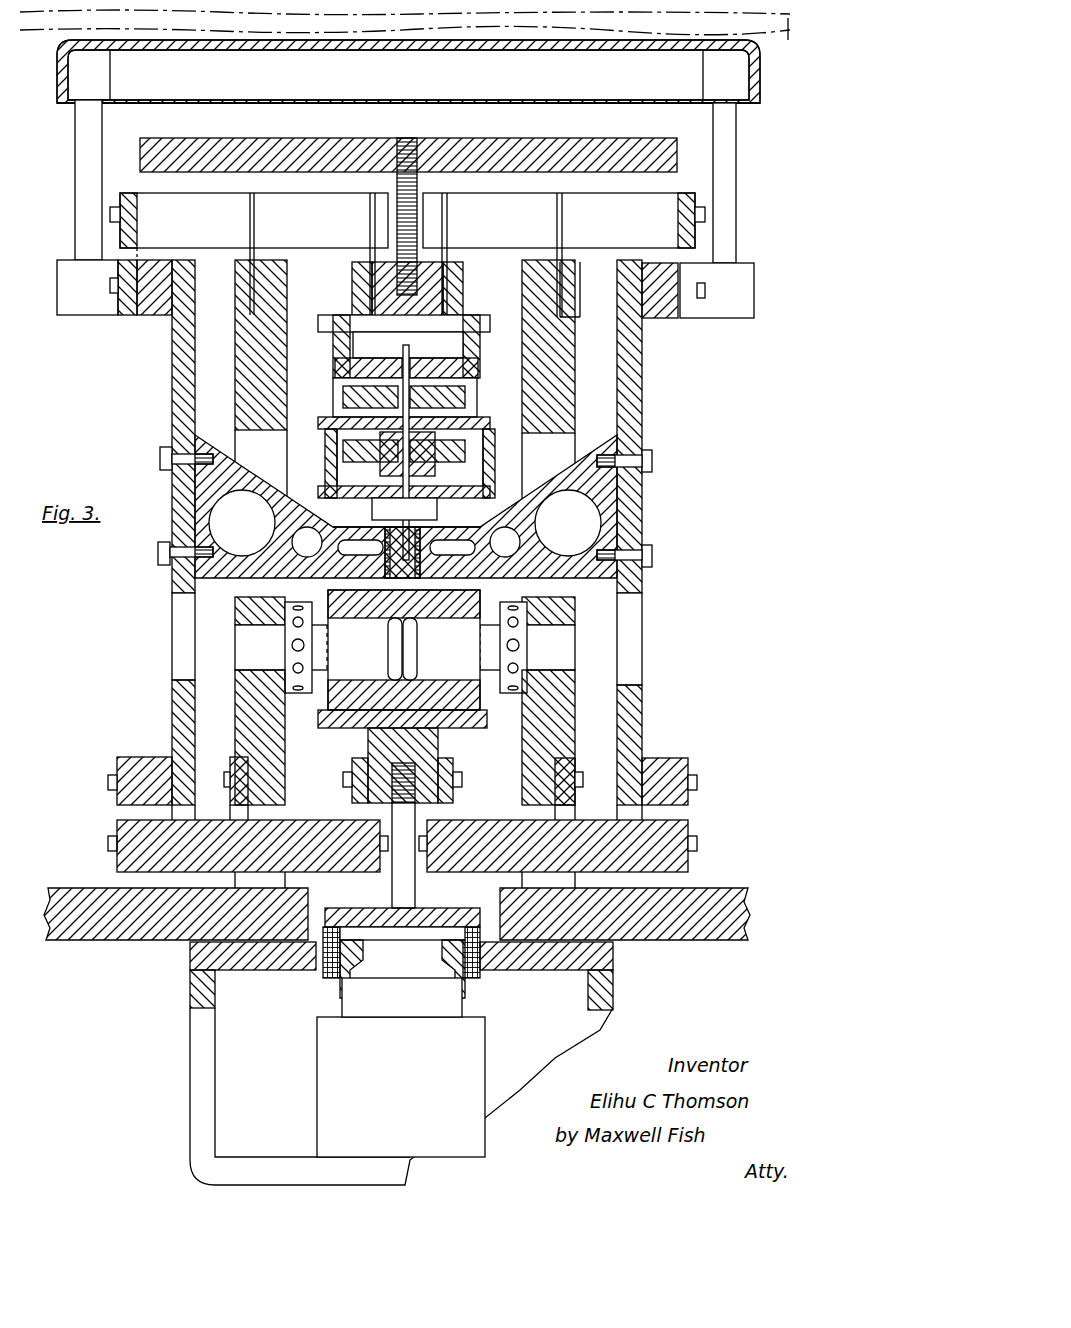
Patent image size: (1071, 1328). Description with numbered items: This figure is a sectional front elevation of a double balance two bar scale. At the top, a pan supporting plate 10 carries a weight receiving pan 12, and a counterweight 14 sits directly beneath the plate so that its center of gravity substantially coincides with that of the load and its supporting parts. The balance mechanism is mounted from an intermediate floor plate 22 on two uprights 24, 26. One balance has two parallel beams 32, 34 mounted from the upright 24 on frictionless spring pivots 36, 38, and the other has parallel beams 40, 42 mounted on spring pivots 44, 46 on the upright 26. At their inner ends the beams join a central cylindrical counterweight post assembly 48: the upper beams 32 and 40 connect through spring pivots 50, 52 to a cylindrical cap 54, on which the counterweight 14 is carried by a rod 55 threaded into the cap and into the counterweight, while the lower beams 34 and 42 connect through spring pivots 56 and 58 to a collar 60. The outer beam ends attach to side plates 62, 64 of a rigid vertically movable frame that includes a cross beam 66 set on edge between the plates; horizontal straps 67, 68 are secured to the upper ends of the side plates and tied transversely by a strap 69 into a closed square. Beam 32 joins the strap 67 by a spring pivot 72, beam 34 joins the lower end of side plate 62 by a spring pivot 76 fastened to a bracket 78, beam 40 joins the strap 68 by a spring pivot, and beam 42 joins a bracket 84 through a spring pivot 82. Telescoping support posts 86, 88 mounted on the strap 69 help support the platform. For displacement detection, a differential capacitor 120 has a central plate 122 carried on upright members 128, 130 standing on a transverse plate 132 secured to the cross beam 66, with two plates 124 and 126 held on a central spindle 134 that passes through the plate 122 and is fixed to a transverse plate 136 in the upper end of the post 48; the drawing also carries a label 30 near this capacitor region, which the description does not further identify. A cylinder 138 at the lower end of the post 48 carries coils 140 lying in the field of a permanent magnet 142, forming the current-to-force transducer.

The pan supporting plate 10 is at (392, 36).
The weight receiving pan 12 is at (286, 60).
The counterweight 14 is at (346, 142).
The intermediate floor plate 22 is at (72, 942).
The upright 24 is at (240, 610).
The upright 26 is at (570, 618).
The disc assembly 30 is at (478, 394).
The upper beam 32 is at (214, 250).
The lower beam 34 is at (155, 862).
The frictionless spring pivot 36 is at (258, 240).
The frictionless spring pivot 38 is at (232, 806).
The upper beam 40 is at (612, 262).
The lower beam 42 is at (648, 865).
The frictionless spring pivot 44 is at (562, 240).
The frictionless spring pivot 46 is at (568, 808).
The cylindrical counterweight post assembly 48 is at (324, 358).
The frictionless spring pivot 50 is at (370, 227).
The frictionless spring pivot 52 is at (448, 240).
The cylindrical cap 54 is at (452, 312).
The rod 55 is at (417, 135).
The frictionless spring pivot 56 is at (352, 806).
The frictionless spring pivot 58 is at (455, 808).
The collar 60 is at (345, 722).
The side plate 62 is at (170, 588).
The side plate 64 is at (640, 588).
The cross beam 66 is at (602, 500).
The strap 67 is at (156, 318).
The strap 68 is at (672, 320).
The strap 69 is at (86, 320).
The spring pivot 72 is at (145, 256).
The spring pivot 76 is at (678, 258).
The bracket 78 is at (140, 757).
The spring pivot 82 is at (690, 814).
The bracket 84 is at (660, 758).
The telescoping support post 86 is at (76, 172).
The telescoping support post 88 is at (736, 142).
The differential capacitor 120 is at (312, 462).
The central plate 122 is at (322, 412).
The plate 124 is at (465, 406).
The plate 126 is at (470, 454).
The upright member 128 is at (328, 472).
The upright member 130 is at (475, 466).
The transverse plate 132 is at (437, 505).
The central spindle 134 is at (408, 345).
The transverse plate 136 is at (478, 366).
The cylinder 138 is at (440, 916).
The coils 140 is at (482, 985).
The permanent magnet 142 is at (455, 1085).